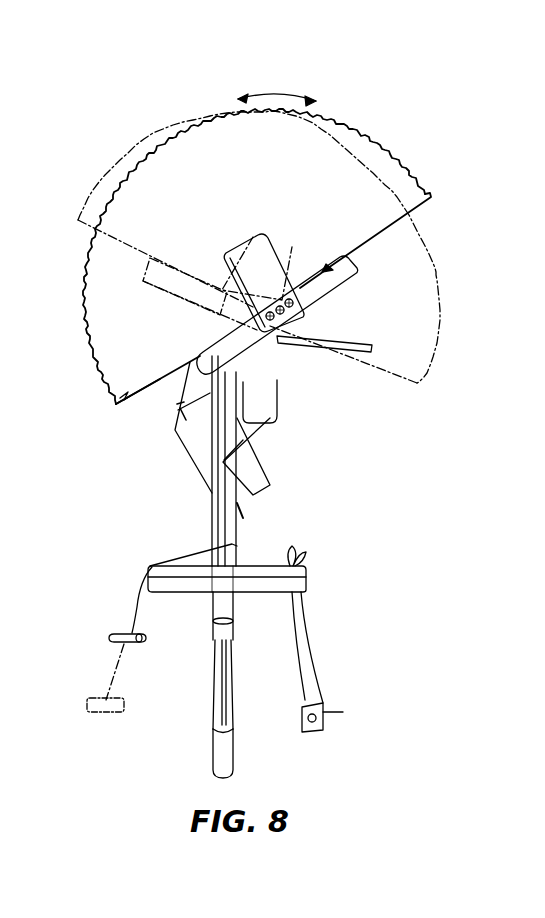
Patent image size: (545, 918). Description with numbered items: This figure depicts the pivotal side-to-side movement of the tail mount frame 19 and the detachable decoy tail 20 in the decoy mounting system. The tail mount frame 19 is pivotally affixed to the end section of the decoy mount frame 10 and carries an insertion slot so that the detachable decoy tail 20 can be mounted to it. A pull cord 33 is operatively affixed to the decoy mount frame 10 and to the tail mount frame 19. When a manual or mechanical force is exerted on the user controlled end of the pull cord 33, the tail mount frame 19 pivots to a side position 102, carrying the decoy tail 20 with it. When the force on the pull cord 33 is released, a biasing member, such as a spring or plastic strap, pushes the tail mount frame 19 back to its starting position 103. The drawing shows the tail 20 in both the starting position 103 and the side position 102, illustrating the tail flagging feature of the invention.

The starting position 103 is at (400, 152).
The side position 102 is at (437, 260).
The detachable decoy tail 20 is at (92, 246).
The tail mount frame 19 is at (335, 288).
The decoy mount frame 10 is at (268, 412).
The pull cord 33 is at (137, 607).